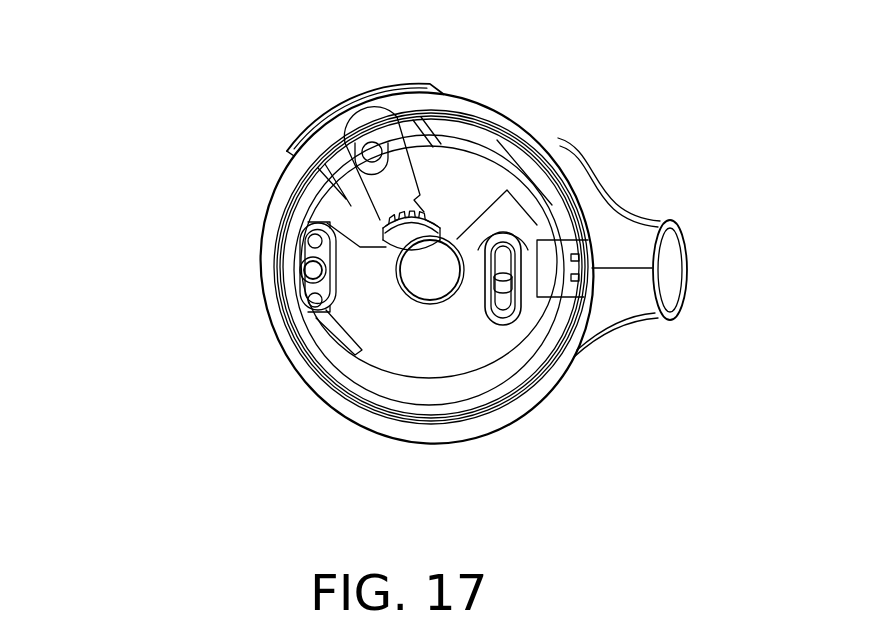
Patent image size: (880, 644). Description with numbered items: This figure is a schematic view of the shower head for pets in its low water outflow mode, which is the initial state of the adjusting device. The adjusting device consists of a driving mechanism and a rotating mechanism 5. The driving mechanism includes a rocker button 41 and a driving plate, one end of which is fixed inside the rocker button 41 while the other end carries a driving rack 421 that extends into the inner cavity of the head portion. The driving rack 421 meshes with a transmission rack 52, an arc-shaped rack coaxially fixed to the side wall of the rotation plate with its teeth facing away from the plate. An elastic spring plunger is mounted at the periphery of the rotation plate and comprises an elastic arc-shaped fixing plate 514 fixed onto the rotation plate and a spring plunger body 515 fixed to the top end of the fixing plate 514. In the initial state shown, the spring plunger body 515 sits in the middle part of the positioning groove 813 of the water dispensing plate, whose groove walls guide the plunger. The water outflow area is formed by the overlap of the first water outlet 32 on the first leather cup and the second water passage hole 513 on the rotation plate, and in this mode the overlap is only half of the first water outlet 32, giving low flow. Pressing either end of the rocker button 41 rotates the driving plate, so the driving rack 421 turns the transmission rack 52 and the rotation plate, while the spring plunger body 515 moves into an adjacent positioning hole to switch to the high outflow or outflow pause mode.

The rocker button 41 is at (350, 103).
The driving rack 421 is at (380, 216).
The transmission rack 52 is at (425, 208).
The first water outlet 32 is at (513, 258).
The arc-shaped fixing plate 514 is at (305, 239).
The positioning groove 813 is at (312, 270).
The spring plunger body 515 is at (283, 337).
The second water passage hole 513 is at (507, 283).
The rotating mechanism 5 is at (453, 350).